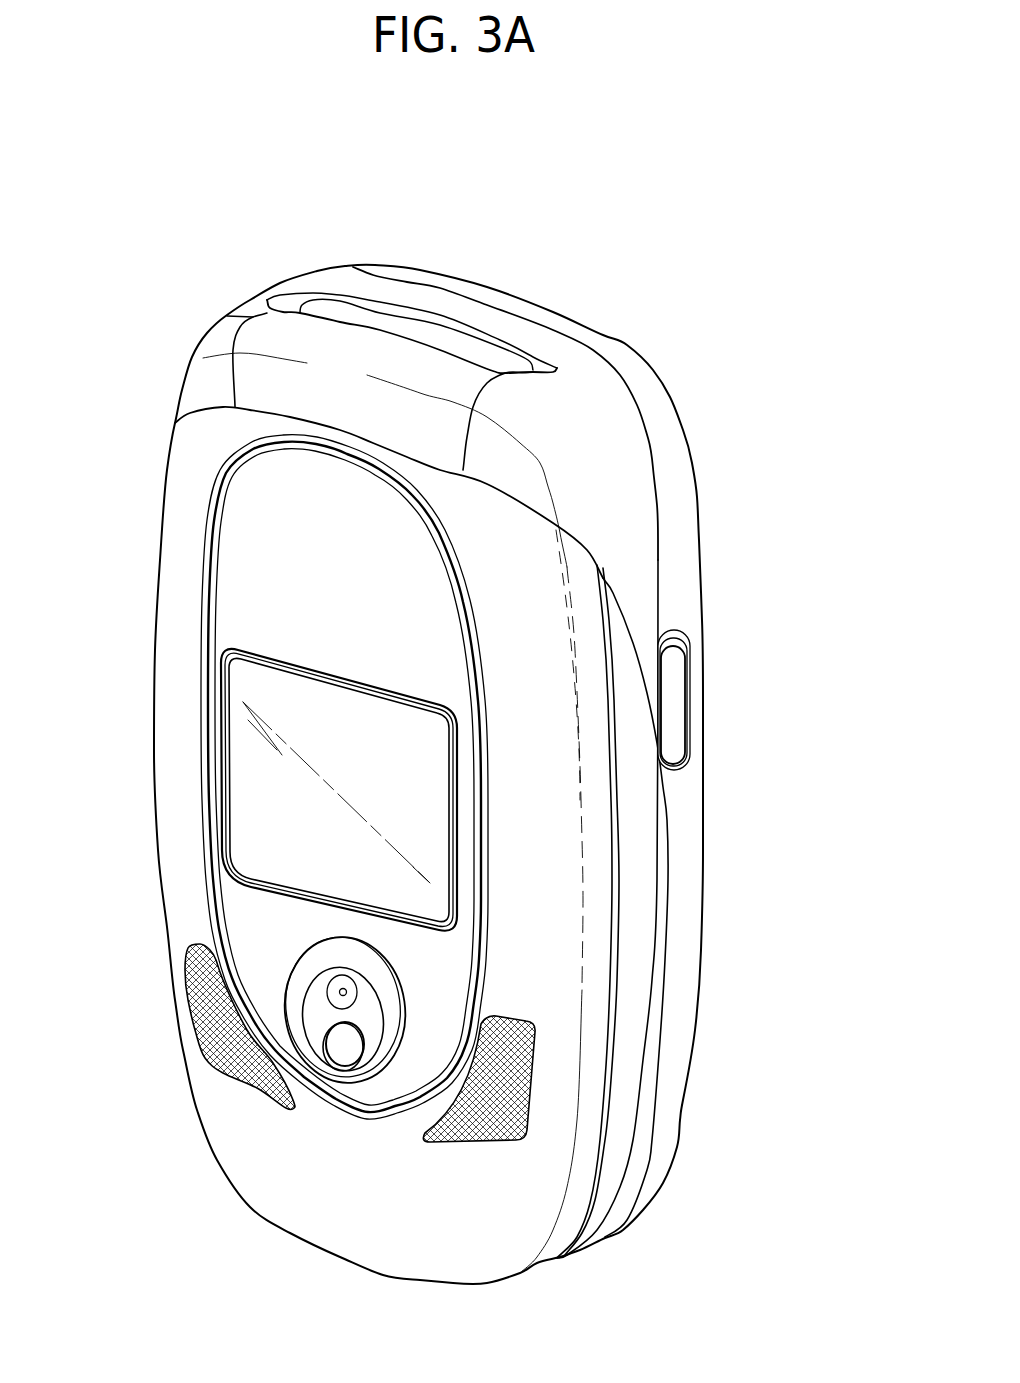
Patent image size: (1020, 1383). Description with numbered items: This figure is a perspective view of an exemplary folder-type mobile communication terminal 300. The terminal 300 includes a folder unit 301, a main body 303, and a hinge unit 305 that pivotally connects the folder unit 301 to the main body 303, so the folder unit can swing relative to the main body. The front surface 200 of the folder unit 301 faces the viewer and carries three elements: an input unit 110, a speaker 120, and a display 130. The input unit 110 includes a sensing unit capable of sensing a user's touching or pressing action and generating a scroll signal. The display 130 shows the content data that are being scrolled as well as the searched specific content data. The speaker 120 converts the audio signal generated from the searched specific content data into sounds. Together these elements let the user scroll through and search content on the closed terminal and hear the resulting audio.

The folder-type mobile communication terminal 300 is at (737, 354).
The front surface 200 is at (175, 535).
The hinge unit 305 is at (399, 363).
The main body 303 is at (685, 812).
The folder unit 301 is at (633, 958).
The display 130 is at (240, 750).
The input unit 110 is at (307, 967).
The speaker 120 is at (460, 1142).